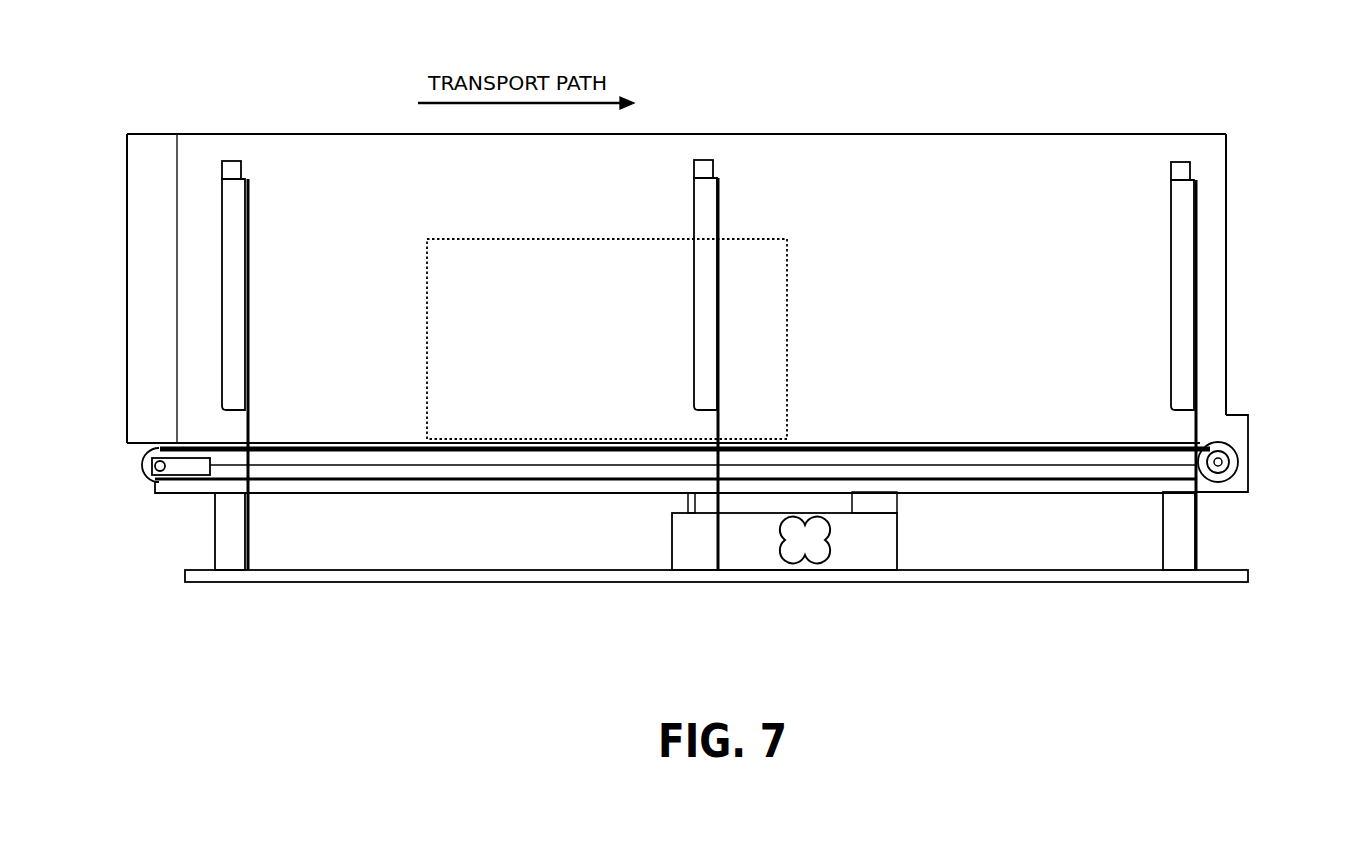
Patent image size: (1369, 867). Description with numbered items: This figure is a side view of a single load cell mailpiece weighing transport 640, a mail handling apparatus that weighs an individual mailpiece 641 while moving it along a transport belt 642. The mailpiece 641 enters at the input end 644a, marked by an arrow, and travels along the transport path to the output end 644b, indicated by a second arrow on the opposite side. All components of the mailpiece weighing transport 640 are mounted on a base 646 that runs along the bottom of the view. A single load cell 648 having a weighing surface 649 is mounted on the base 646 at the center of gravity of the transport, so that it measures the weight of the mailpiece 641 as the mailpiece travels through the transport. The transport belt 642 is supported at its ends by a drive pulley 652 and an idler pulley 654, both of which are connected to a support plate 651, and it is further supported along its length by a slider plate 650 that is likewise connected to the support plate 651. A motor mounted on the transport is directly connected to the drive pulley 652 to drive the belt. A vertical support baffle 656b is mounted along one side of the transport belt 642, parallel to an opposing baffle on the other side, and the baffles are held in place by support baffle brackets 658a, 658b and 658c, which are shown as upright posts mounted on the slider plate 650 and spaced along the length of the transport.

The mailpiece weighing transport 640 is at (680, 247).
The mailpiece 641 is at (610, 240).
The transport belt 642 is at (1092, 478).
The input end 644a is at (111, 233).
The output end 644b is at (1249, 243).
The base 646 is at (185, 575).
The load cell 648 is at (867, 545).
The weighing surface 649 is at (750, 515).
The slider plate 650 is at (982, 460).
The support plate 651 is at (1240, 425).
The drive pulley 652 is at (1232, 460).
The idler pulley 654 is at (143, 470).
The support baffle 656b is at (1124, 150).
The support baffle bracket 658a is at (1180, 265).
The support baffle bracket 658b is at (710, 225).
The support baffle bracket 658c is at (240, 252).